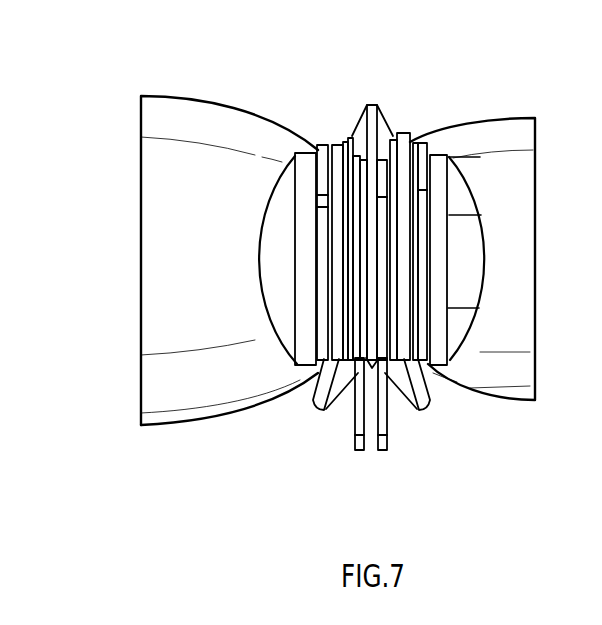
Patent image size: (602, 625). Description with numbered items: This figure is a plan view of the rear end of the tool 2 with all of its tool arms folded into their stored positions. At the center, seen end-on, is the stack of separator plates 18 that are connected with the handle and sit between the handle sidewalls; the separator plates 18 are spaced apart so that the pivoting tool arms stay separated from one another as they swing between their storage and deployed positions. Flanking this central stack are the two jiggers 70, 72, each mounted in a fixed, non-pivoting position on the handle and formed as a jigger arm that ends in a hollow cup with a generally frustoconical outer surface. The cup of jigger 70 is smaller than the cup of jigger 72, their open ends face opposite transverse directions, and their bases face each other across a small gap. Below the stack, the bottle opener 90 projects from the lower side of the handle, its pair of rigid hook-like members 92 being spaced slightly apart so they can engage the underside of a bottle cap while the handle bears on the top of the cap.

The tool 2 is at (395, 91).
The separator plates 18 is at (350, 178).
The jigger 70 is at (518, 305).
The jigger 72 is at (192, 385).
The bottle opener 90 is at (328, 452).
The hook-like members 92 is at (390, 422).